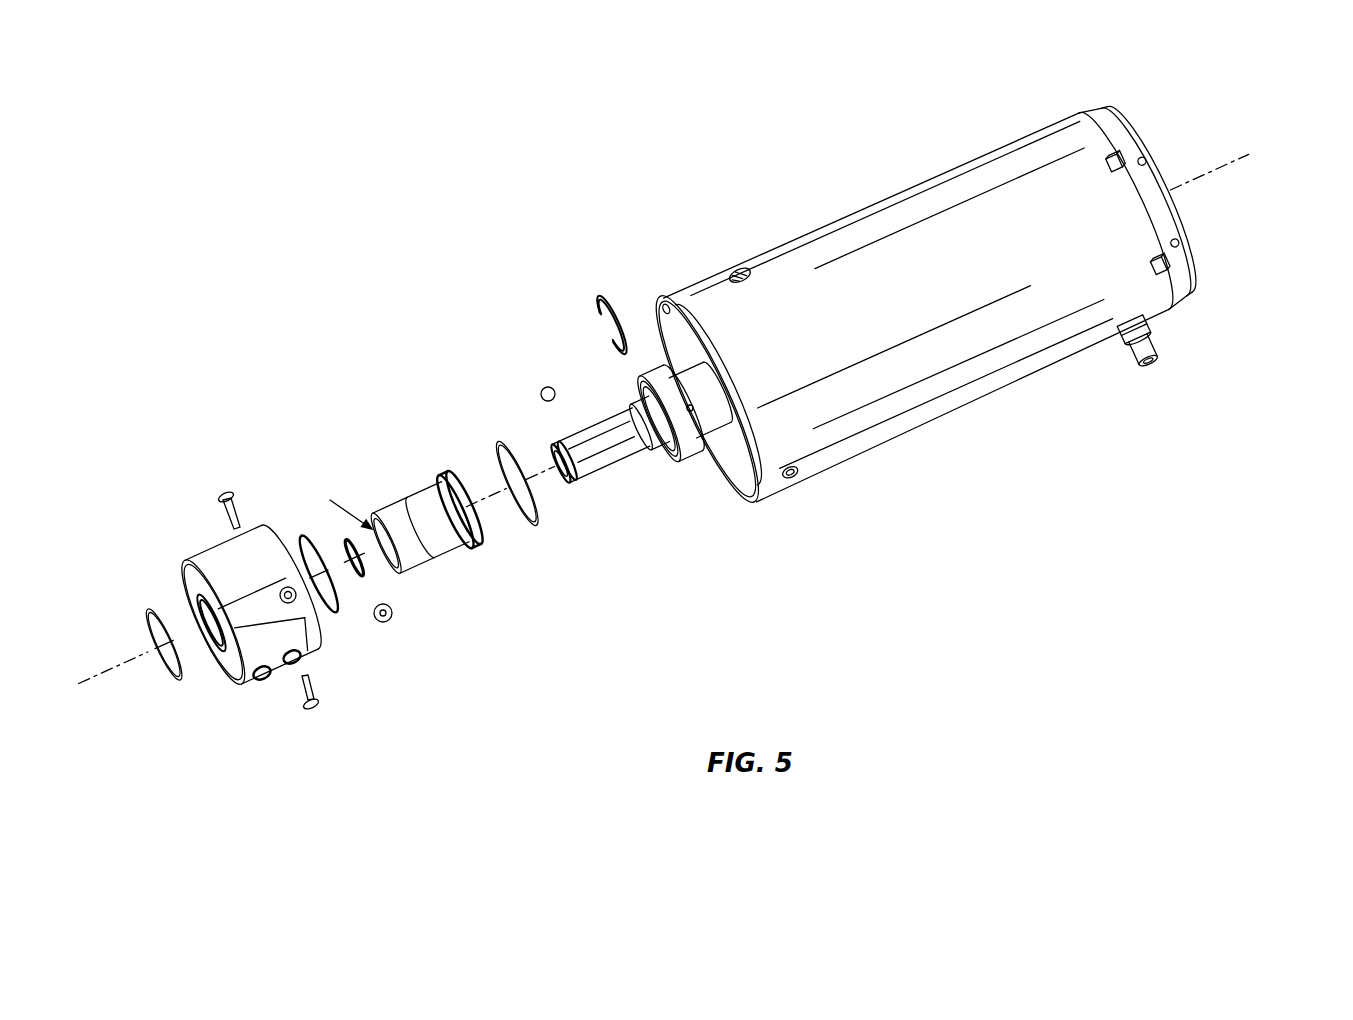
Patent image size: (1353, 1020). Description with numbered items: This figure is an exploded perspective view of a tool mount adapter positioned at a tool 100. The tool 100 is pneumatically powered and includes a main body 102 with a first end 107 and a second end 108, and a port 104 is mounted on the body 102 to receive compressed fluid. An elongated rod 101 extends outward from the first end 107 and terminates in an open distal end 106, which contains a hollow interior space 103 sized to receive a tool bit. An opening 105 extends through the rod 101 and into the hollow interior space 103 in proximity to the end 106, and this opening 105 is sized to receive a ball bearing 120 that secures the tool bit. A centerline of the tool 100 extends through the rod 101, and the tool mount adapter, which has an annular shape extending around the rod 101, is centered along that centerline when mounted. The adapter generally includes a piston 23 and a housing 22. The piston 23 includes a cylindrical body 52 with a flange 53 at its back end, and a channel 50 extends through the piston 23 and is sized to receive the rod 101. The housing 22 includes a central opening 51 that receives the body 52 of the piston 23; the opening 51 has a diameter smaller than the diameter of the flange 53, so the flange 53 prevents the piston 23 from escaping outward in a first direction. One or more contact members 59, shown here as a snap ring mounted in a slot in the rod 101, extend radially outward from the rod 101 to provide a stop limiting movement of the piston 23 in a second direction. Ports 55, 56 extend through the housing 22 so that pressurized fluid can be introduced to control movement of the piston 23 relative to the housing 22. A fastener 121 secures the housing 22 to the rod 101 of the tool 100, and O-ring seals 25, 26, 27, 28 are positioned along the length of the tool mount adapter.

The tool 100 is at (910, 302).
The main body 102 is at (987, 367).
The first end 107 is at (667, 295).
The second end 108 is at (1140, 150).
The port 104 is at (1163, 362).
The elongated rod 101 is at (565, 443).
The opening 105 is at (577, 441).
The open distal end 106 is at (555, 447).
The hollow interior space 103 is at (565, 465).
The contact member 59 is at (598, 302).
The ball bearing 120 is at (545, 389).
The O-ring seal 25 is at (540, 512).
The piston 23 is at (456, 517).
The cylindrical body 52 is at (442, 537).
The flange 53 is at (481, 540).
The channel 50 is at (335, 509).
The O-ring seal 26 is at (368, 563).
The O-ring seal 27 is at (342, 601).
The housing 22 is at (240, 626).
The central opening 51 is at (199, 617).
The port 55 is at (300, 658).
The port 56 is at (265, 678).
The fastener 121 is at (316, 695).
The O-ring seal 28 is at (180, 678).